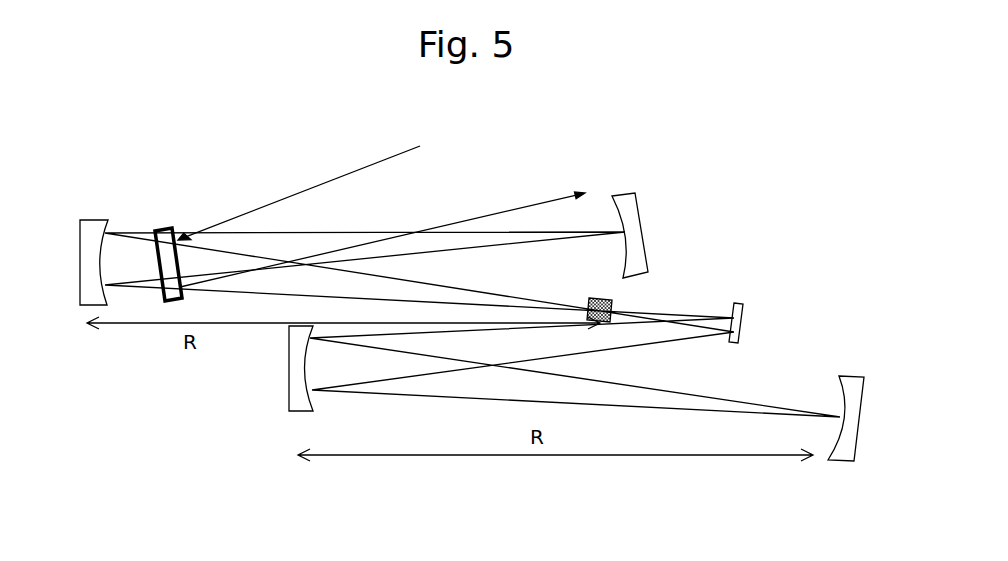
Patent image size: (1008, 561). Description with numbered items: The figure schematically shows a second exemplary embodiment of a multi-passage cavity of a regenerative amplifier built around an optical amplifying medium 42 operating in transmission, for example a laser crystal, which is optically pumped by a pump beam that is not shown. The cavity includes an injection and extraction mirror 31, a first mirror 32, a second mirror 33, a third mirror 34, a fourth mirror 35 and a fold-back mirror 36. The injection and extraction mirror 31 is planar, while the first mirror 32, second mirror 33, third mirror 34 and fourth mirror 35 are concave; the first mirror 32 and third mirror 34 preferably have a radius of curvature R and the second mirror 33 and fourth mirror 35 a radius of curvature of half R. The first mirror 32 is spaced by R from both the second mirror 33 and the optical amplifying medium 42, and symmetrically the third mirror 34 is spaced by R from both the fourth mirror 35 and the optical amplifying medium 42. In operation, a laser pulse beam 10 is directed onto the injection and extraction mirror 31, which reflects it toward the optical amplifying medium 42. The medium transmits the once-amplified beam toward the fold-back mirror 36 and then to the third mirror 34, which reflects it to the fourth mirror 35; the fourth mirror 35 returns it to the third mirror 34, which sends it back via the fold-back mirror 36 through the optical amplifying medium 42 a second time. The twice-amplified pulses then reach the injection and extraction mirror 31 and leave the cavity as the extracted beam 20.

The laser pulse beam 10 is at (347, 173).
The beam of laser pulses amplified twice 20 is at (503, 208).
The injection and extraction mirror 31 is at (163, 230).
The first mirror 32 is at (98, 228).
The second mirror 33 is at (643, 208).
The third mirror 34 is at (289, 380).
The fourth mirror 35 is at (846, 375).
The fold-back mirror 36 is at (743, 302).
The optical amplifying medium 42 is at (613, 302).